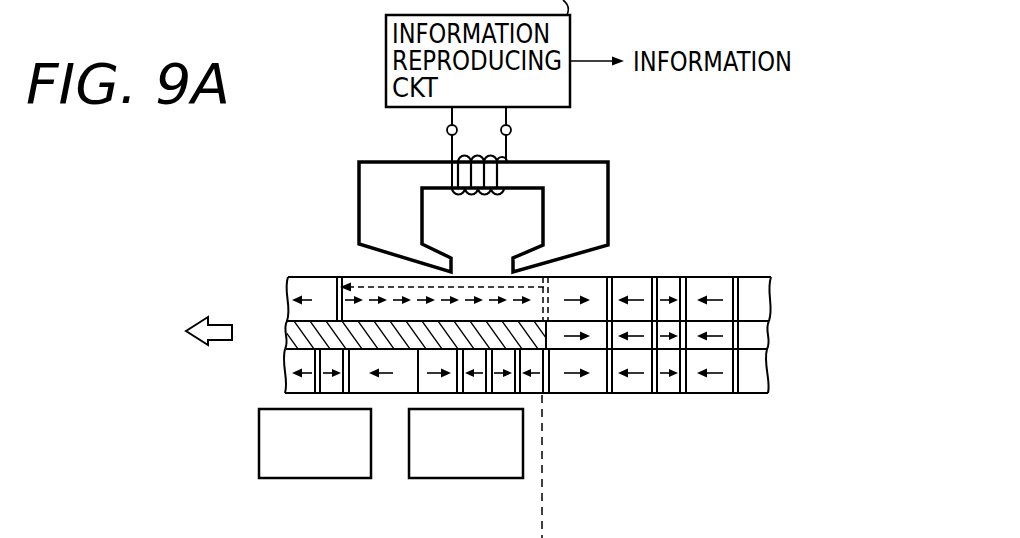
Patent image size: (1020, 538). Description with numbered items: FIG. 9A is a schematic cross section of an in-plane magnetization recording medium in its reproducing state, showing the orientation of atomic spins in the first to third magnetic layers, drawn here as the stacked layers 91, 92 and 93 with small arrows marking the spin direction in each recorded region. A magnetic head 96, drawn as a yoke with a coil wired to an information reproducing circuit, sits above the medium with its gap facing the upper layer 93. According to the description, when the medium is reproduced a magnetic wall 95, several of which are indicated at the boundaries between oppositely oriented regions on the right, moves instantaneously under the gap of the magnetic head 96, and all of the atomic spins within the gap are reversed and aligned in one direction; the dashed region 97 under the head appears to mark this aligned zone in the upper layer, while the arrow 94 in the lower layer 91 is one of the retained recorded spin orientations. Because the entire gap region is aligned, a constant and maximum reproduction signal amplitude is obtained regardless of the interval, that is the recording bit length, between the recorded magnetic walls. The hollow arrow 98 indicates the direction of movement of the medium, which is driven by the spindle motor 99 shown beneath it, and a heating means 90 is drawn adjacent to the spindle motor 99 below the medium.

The heating means 90 is at (510, 479).
The first magnetic layer (recording layer) 91 is at (770, 369).
The intermediate layer 92 is at (771, 332).
The reproducing magnetic layer 93 is at (771, 290).
The recorded magnetic domain 94 is at (718, 373).
The magnetic wall 95 is at (546, 278).
The magnetic head 96 is at (598, 162).
The reproducing region (transferred domain) 97 is at (343, 277).
The disk moving direction 98 is at (221, 318).
The spindle motor 99 is at (365, 479).